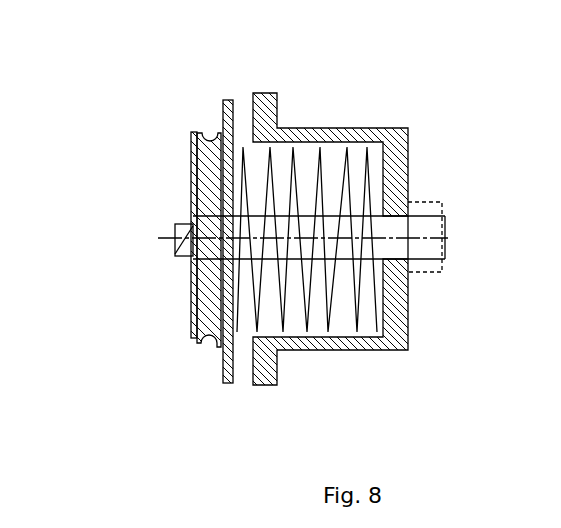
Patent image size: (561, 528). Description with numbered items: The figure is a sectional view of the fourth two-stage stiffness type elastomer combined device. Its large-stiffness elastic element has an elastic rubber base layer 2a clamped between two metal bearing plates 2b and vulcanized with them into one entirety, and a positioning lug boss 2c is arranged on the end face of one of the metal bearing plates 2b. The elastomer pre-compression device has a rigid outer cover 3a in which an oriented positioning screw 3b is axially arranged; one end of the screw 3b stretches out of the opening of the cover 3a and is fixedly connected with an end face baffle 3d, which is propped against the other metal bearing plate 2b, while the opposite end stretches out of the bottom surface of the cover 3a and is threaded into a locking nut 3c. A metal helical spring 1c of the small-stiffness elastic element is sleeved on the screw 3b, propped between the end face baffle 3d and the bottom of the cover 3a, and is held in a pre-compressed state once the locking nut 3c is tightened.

The metal helical spring 1c is at (293, 183).
The elastic rubber base layer 2a is at (197, 333).
The metal bearing plate 2b is at (217, 140).
The positioning lug boss 2c is at (178, 225).
The rigid outer cover 3a is at (410, 322).
The oriented positioning screw 3b is at (428, 232).
The locking nut 3c is at (427, 273).
The end face baffle 3d is at (230, 99).